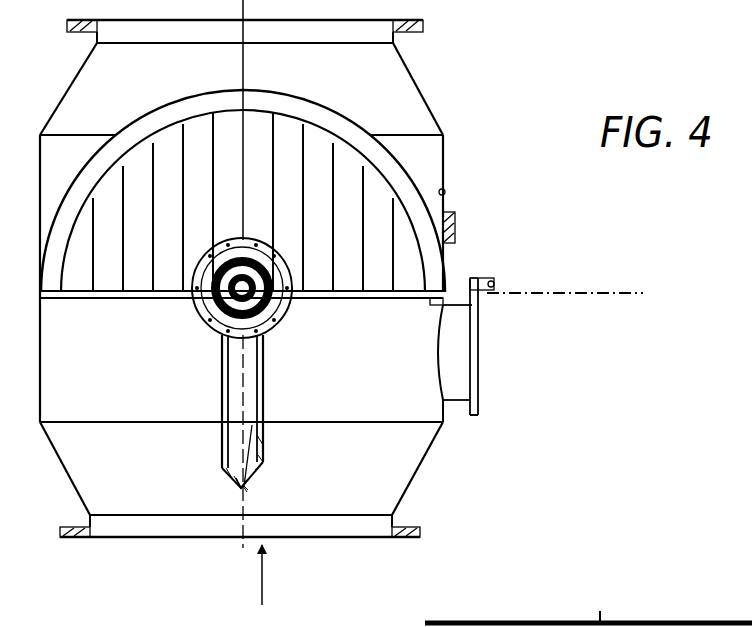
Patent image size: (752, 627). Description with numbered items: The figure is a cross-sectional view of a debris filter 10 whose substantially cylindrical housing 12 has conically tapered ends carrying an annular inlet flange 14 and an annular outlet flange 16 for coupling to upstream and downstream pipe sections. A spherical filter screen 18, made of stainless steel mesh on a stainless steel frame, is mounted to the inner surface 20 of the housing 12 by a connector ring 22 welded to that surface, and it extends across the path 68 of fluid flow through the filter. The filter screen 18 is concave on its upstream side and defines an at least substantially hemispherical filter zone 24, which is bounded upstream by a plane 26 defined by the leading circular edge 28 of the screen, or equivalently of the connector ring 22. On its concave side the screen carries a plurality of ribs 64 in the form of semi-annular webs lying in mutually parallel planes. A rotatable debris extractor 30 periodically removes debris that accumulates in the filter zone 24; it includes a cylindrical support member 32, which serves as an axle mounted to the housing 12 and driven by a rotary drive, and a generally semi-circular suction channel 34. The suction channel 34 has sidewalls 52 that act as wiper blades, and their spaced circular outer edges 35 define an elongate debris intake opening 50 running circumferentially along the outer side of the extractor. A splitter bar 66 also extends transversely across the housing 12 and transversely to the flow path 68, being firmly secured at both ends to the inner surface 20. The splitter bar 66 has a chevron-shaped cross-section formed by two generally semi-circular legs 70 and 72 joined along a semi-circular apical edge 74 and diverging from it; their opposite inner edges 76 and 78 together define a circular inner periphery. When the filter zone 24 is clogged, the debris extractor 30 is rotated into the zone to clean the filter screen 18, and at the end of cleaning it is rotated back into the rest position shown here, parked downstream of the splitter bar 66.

The debris filter 10 is at (545, 73).
The housing 12 is at (423, 340).
The inlet flange 14 is at (416, 535).
The outlet flange 16 is at (425, 22).
The filter screen 18 is at (445, 166).
The inner surface 20 is at (448, 198).
The connector ring 22 is at (58, 300).
The filter zone 24 is at (177, 200).
The plane 26 is at (592, 285).
The leading circular edge 28 is at (437, 330).
The debris extractor 30 is at (213, 432).
The support member 32 is at (272, 306).
The suction channel 34 is at (265, 440).
The circular outer edges 35 is at (258, 457).
The debris intake opening 50 is at (236, 478).
The sidewalls 52 is at (228, 470).
The ribs 64 is at (340, 153).
The splitter bar 66 is at (257, 480).
The path 68 is at (262, 590).
The leg 70 is at (238, 482).
The leg 72 is at (246, 490).
The apical edge 74 is at (247, 492).
The inner edge 76 is at (253, 425).
The inner edge 78 is at (257, 470).